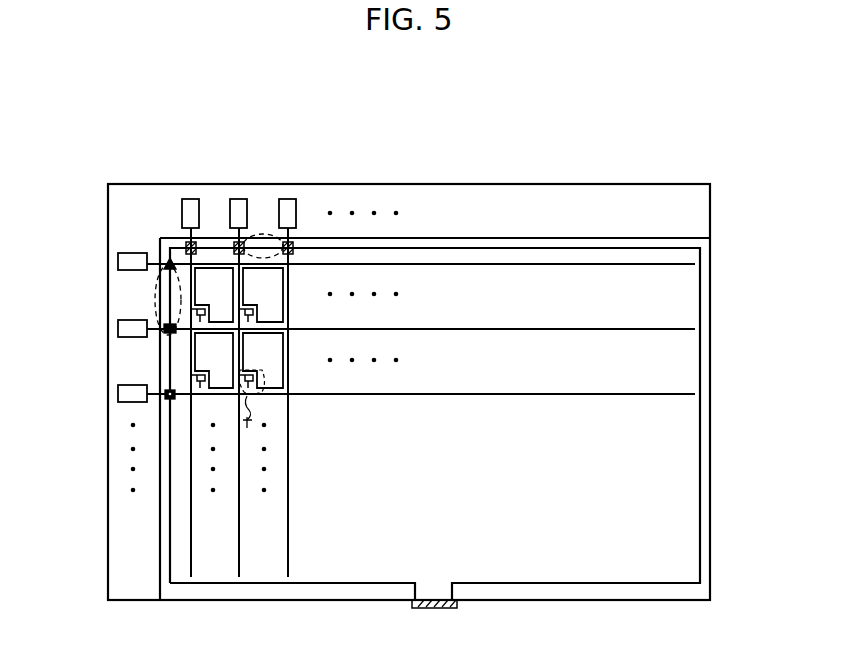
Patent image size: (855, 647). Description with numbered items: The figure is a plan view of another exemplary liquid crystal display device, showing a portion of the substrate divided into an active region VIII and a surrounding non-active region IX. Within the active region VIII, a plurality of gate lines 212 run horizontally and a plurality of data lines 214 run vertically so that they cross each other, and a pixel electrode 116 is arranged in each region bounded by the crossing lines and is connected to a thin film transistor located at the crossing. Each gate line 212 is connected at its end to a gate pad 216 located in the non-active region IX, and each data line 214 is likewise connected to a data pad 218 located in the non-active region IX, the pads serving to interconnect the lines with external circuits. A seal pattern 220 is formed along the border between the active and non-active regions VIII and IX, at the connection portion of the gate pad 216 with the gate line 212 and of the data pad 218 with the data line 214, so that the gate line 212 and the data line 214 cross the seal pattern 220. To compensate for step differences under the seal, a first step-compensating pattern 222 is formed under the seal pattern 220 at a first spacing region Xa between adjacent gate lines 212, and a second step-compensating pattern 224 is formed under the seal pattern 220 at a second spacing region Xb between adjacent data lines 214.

The pixel electrode 116 is at (288, 346).
The gate line 212 is at (374, 395).
The data line 214 is at (288, 503).
The gate pad 216 is at (118, 396).
The data pad 218 is at (185, 201).
The seal pattern 220 is at (313, 245).
The first step-compensating pattern 222 is at (162, 333).
The second step-compensating pattern 224 is at (197, 241).
The first spacing region Xa is at (156, 293).
The second spacing region Xb is at (258, 234).
The non-active region IX is at (695, 213).
The active region VIII is at (680, 309).